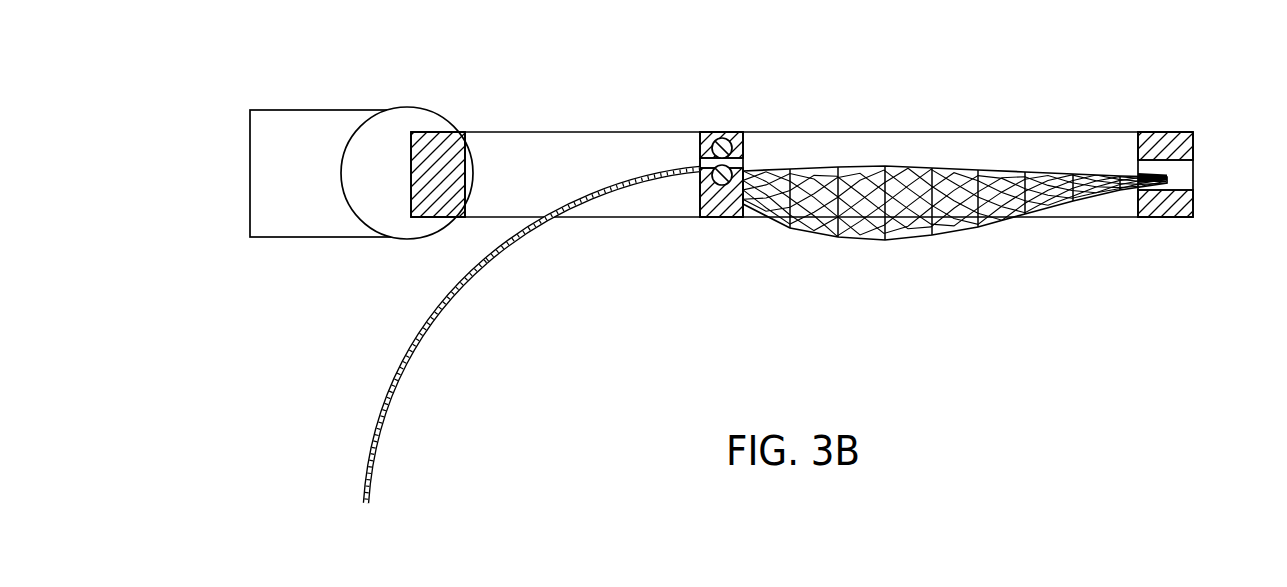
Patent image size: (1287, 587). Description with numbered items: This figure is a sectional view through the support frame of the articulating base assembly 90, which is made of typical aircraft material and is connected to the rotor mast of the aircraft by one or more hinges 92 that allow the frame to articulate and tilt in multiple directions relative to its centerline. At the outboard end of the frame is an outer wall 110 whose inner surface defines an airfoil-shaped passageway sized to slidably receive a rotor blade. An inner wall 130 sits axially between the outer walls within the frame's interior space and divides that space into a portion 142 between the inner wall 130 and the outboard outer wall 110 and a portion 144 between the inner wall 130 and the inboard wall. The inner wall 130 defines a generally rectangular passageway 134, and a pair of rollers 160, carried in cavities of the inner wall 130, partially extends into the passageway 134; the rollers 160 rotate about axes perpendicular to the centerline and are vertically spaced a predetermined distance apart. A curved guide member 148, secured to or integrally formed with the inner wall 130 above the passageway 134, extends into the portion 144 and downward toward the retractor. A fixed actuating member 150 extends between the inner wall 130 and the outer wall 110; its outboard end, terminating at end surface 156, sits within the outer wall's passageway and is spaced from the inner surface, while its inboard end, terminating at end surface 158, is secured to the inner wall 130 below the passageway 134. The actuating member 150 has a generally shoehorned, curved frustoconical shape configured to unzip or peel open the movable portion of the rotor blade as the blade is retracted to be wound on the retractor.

The articulating base assembly 90 is at (596, 120).
The hinge 92 is at (436, 94).
The outer wall 110 is at (1195, 136).
The inner wall 130 is at (707, 136).
The passageway 134 is at (684, 163).
The portion 142 is at (1092, 148).
The portion 144 is at (618, 205).
The curved guide member 148 is at (370, 426).
The fixed actuating member 150 is at (922, 148).
The end surface 156 is at (1168, 177).
The end surface 158 is at (732, 214).
The rollers 160 is at (728, 139).